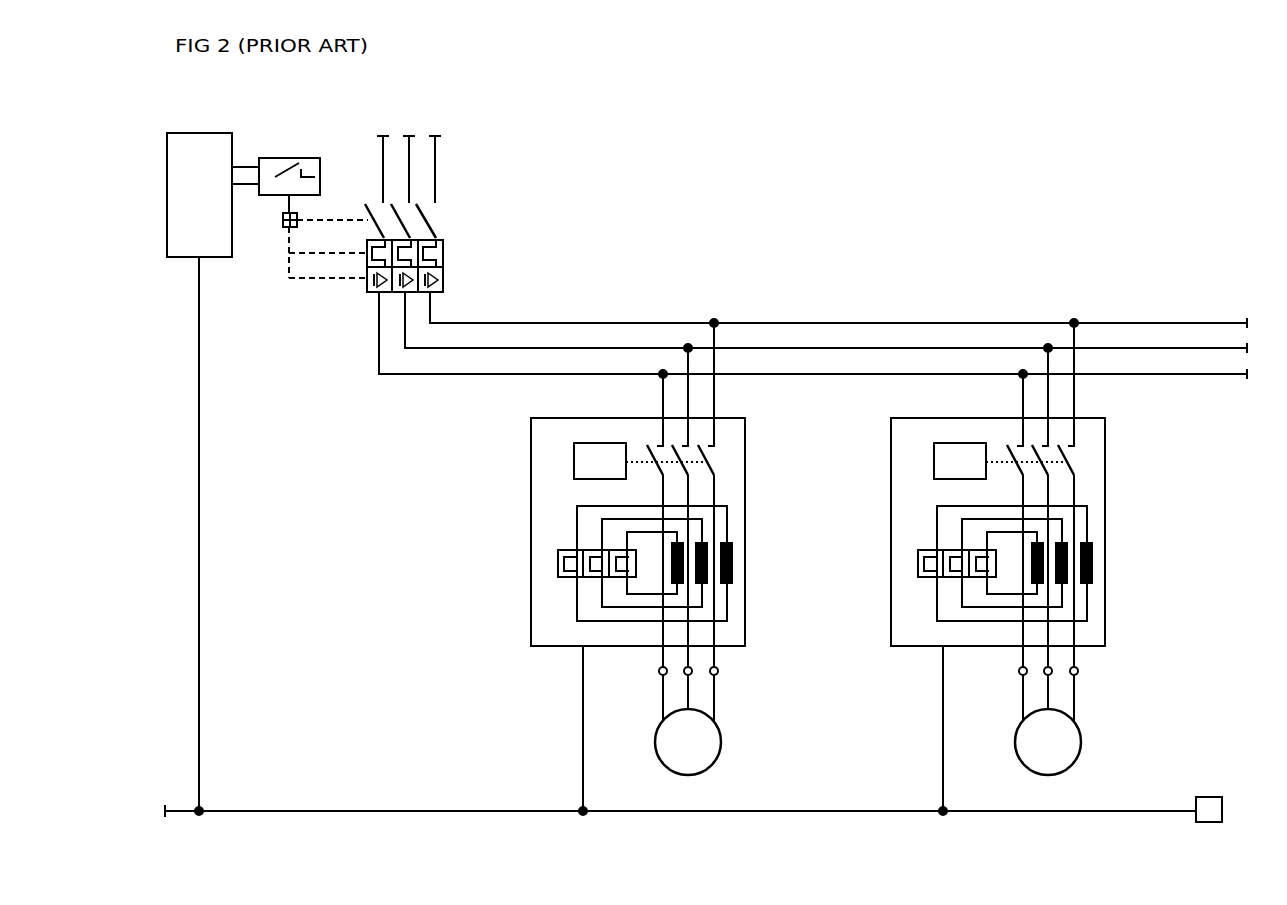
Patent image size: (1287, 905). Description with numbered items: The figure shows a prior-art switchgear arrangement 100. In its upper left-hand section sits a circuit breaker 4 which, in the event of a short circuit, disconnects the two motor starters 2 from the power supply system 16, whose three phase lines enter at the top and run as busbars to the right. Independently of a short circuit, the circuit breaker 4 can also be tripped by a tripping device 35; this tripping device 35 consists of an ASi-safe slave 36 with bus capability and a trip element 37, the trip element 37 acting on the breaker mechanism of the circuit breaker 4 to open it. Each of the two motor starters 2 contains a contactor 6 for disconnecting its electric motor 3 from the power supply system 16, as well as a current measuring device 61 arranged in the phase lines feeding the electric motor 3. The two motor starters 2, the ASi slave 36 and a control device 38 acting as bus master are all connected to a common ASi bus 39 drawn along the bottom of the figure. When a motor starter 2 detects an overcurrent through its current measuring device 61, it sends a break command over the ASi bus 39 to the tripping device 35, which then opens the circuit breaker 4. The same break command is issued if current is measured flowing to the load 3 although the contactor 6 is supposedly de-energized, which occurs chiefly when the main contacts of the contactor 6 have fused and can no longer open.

The motor control system 100 is at (1146, 194).
The motor starter 2 is at (745, 477).
The electric motor 3 is at (721, 742).
The circuit breaker 4 is at (443, 253).
The contactor 6 is at (574, 465).
The power supply system 16 is at (426, 179).
The tripping device 35 is at (264, 270).
The ASi-safe slave 36 is at (202, 150).
The trip element 37 is at (294, 158).
The control device 38 is at (1213, 810).
The ASi bus 39 is at (368, 811).
The current measuring device 61 is at (560, 527).